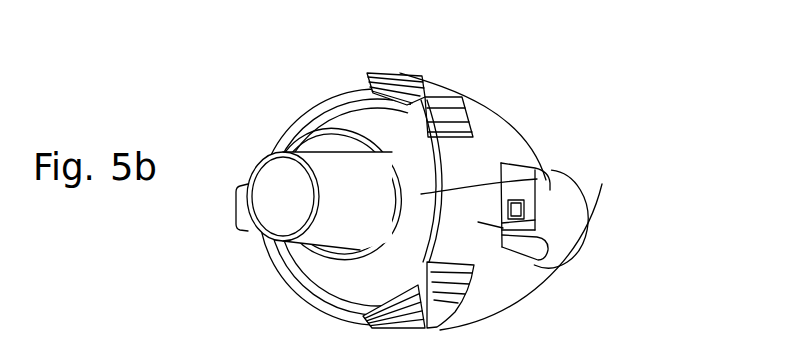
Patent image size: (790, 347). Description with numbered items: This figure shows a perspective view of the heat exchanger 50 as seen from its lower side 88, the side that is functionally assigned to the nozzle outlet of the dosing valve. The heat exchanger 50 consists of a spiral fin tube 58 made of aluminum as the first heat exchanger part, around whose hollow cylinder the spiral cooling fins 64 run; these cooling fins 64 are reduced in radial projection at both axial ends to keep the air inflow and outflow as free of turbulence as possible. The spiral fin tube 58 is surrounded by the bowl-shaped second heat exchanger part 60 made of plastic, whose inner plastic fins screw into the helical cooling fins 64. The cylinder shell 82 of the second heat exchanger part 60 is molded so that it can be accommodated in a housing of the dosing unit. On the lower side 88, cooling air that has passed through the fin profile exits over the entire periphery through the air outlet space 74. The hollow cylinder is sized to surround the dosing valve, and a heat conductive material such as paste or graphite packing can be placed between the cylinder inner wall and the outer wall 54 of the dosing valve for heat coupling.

The heat exchanger 50 is at (534, 115).
The outer wall of the dosing valve 54 is at (314, 201).
The spiral fin tube 58 is at (303, 279).
The second heat exchanger part 60 is at (483, 248).
The cooling fins 64 is at (512, 182).
The air outlet space 74 is at (316, 280).
The cylinder shell 82 is at (537, 228).
The lower side of the heat exchanger 88 is at (340, 121).